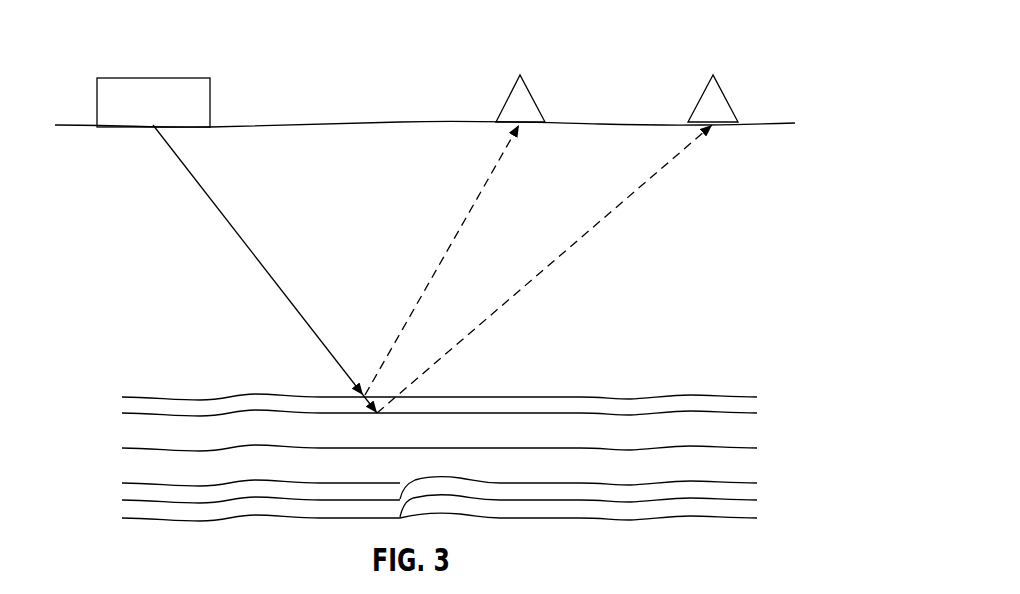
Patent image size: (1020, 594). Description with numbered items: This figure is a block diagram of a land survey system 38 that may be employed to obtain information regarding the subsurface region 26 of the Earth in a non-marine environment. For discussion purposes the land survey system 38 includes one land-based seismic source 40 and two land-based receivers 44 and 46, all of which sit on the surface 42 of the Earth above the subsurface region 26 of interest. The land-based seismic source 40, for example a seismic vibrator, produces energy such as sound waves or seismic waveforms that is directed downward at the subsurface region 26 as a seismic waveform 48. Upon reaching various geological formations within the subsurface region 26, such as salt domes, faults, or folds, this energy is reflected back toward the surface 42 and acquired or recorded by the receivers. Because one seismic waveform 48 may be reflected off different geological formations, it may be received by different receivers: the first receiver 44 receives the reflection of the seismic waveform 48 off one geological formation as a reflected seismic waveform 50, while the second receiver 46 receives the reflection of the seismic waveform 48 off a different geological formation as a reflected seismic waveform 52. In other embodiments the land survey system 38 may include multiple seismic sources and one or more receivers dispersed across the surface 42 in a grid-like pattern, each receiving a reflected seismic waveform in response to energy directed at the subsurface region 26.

The land survey system 38 is at (756, 30).
The land-based seismic source 40 is at (150, 78).
The surface of the Earth 42 is at (385, 122).
The first land-based receiver 44 is at (528, 90).
The second land-based receiver 46 is at (722, 90).
The seismic waveform 48 is at (242, 238).
The reflected seismic waveform 50 is at (435, 272).
The reflected seismic waveform 52 is at (541, 272).
The subsurface region 26 is at (105, 388).